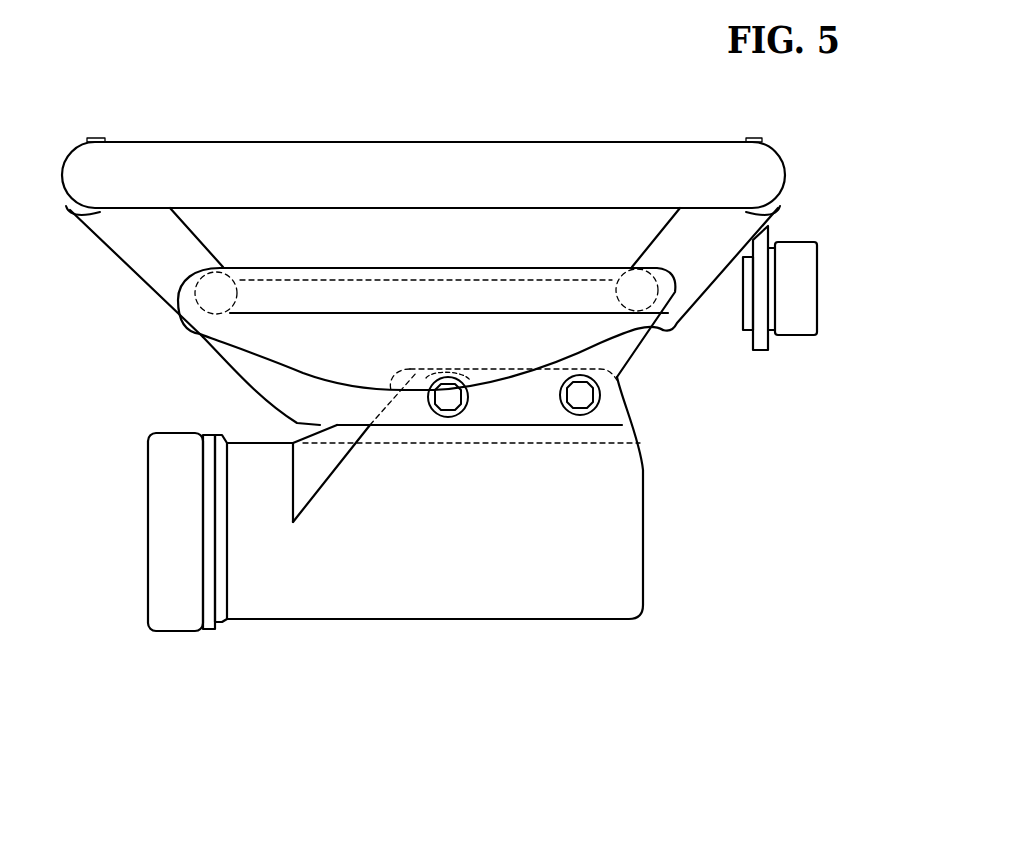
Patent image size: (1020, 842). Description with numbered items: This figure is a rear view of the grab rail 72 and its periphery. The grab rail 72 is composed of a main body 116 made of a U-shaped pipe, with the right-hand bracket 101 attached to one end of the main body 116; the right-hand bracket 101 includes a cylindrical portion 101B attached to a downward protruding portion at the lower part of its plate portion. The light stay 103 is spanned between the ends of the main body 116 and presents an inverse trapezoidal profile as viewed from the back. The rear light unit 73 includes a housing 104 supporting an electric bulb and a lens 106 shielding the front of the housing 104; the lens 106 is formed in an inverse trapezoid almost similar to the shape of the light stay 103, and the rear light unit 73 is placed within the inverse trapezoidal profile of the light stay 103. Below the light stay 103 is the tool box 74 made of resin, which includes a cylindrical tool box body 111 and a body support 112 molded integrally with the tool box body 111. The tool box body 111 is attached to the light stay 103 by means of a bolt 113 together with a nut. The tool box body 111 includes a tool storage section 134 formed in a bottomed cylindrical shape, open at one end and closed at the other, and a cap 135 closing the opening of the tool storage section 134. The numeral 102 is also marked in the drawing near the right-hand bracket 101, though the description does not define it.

The grab rail 72 is at (268, 141).
The main body 116 is at (447, 141).
The light stay 103 is at (133, 257).
The housing 104 is at (195, 292).
The rear light unit 73 is at (228, 350).
The lens 106 is at (290, 352).
The body support 112 is at (618, 419).
The bolt 113 is at (448, 417).
The tool box 74 is at (535, 622).
The tool box body 111 is at (423, 622).
The tool storage section 134 is at (342, 605).
The cap 135 is at (177, 623).
The right-hand bracket 101 is at (760, 353).
The cylindrical portion 101B is at (800, 303).
The sensor unit 102 is at (828, 319).